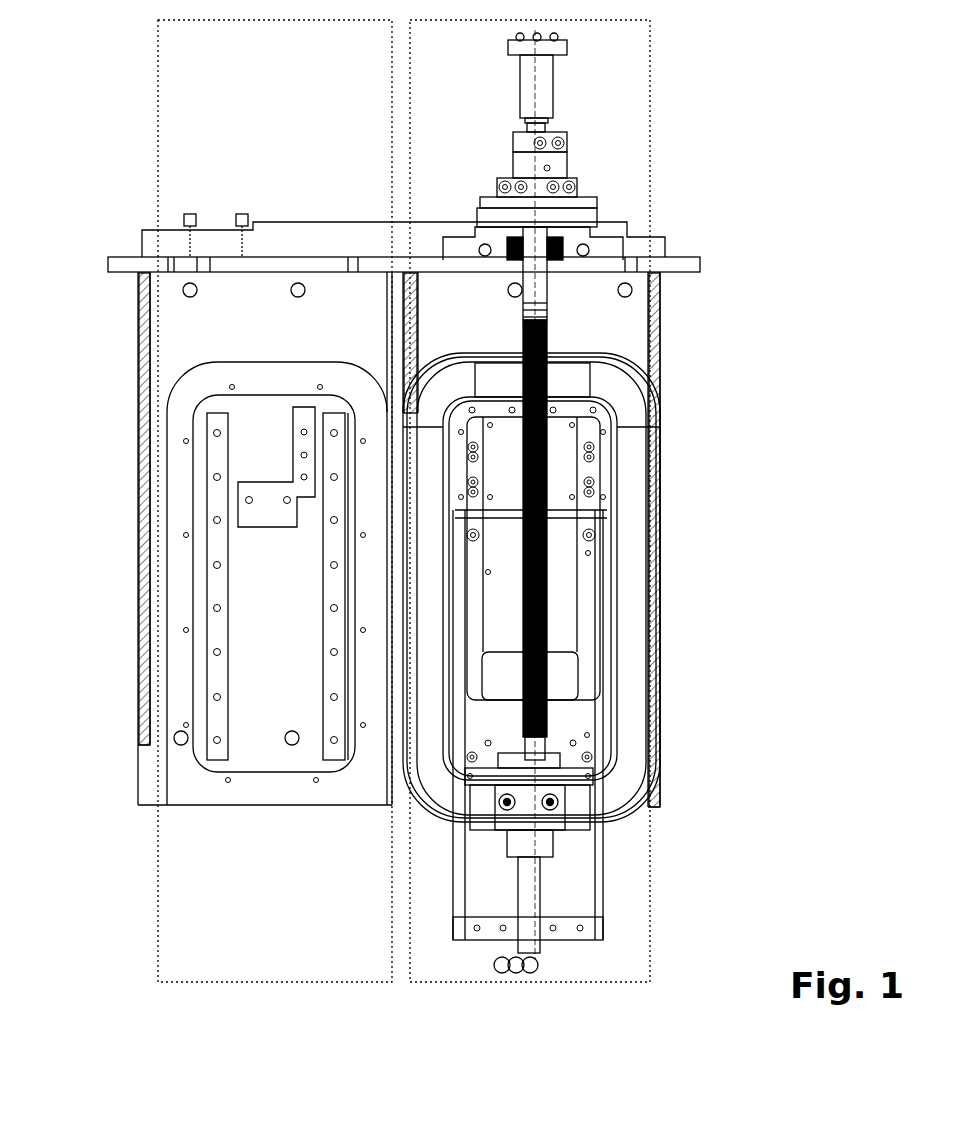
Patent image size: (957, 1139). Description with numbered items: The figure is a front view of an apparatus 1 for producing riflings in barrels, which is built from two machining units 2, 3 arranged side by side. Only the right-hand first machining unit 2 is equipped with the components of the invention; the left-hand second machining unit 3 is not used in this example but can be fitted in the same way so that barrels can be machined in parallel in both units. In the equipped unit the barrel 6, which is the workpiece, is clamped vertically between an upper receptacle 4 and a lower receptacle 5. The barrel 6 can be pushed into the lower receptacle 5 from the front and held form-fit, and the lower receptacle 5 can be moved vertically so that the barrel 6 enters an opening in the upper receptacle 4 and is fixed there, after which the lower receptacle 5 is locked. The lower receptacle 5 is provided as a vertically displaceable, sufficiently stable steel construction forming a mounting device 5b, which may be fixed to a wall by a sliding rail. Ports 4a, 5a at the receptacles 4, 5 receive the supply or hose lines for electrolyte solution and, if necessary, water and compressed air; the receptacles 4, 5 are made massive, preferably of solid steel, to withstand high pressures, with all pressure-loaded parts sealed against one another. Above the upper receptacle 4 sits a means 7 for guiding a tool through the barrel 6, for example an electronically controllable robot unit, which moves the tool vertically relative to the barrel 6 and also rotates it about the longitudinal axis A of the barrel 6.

The apparatus 1 is at (108, 185).
The first machining unit 2 is at (655, 92).
The second machining unit 3 is at (390, 863).
The upper receptacle of the workpiece 4 is at (547, 168).
The ports for electrolyte solution 4a is at (567, 143).
The lower receptacle of the workpiece 5 is at (553, 763).
The ports for electrolyte solution 5a is at (523, 967).
The mounting device 5b is at (603, 724).
The barrel 6 is at (547, 290).
The means for guiding a tool through the barrel 7 is at (550, 87).
The longitudinal axis of barrel A is at (537, 265).